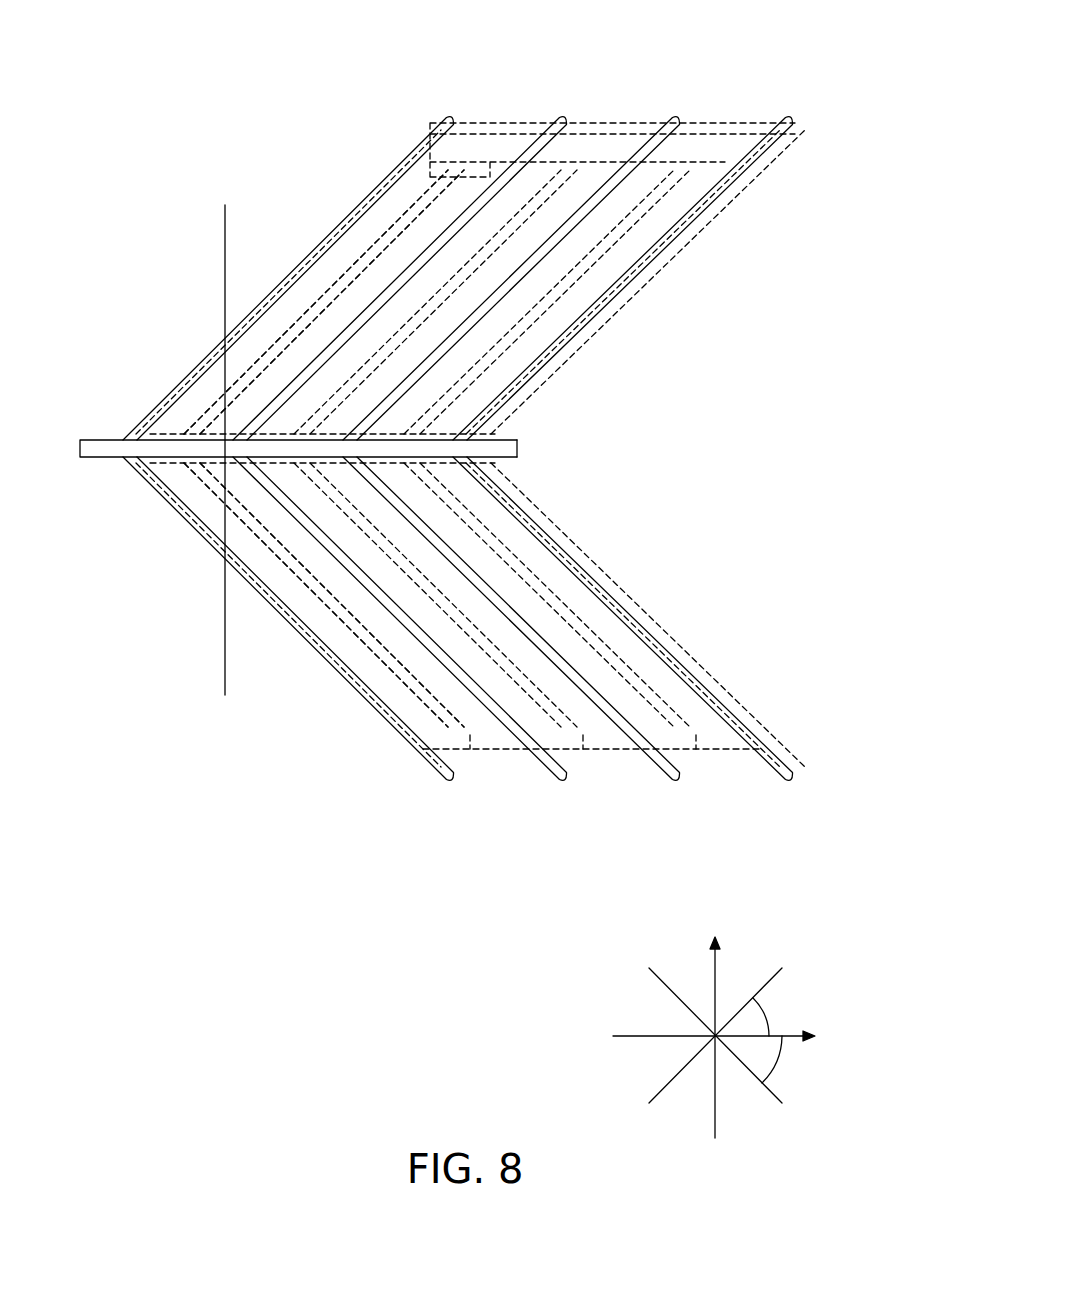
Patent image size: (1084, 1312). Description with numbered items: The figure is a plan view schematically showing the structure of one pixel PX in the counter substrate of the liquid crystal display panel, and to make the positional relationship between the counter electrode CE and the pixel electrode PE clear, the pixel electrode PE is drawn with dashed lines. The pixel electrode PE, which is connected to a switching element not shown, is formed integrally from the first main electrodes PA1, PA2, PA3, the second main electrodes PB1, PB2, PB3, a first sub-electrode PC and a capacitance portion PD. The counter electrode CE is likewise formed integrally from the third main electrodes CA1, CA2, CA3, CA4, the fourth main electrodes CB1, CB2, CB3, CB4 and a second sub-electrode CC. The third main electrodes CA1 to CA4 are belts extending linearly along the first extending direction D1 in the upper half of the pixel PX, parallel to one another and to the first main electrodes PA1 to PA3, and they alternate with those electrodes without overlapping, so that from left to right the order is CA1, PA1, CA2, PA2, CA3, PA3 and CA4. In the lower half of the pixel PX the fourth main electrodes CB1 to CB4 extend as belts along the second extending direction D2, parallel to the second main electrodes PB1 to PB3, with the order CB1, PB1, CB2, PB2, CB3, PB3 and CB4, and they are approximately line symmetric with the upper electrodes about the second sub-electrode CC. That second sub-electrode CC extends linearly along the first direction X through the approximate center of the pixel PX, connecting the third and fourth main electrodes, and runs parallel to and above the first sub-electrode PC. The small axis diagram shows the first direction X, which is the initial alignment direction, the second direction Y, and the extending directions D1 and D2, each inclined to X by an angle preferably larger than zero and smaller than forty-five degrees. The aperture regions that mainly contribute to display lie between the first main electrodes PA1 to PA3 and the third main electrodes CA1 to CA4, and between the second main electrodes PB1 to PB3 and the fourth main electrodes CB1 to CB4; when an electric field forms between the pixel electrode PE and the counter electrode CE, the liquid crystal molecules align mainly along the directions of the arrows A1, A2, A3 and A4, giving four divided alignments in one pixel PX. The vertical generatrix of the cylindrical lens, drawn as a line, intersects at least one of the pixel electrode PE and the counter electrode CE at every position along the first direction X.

The third main electrode CA1 is at (453, 118).
The third main electrode CA2 is at (566, 118).
The third main electrode CA3 is at (679, 118).
The third main electrode CA4 is at (791, 118).
The fourth main electrode CB1 is at (440, 780).
The fourth main electrode CB2 is at (552, 780).
The fourth main electrode CB3 is at (665, 780).
The fourth main electrode CB4 is at (778, 780).
The first main electrode PA1 is at (493, 160).
The first main electrode PA2 is at (607, 160).
The first main electrode PA3 is at (720, 160).
The second main electrode PB1 is at (473, 750).
The second main electrode PB2 is at (585, 750).
The second main electrode PB3 is at (697, 750).
The pixel PX is at (643, 118).
The capacitance portion PD is at (430, 177).
The pixel electrode PE is at (650, 233).
The first sub-electrode PC is at (172, 470).
The counter electrode CE is at (98, 470).
The second sub-electrode CC is at (500, 458).
The arrow A1 is at (364, 240).
The arrow A2 is at (394, 264).
The arrow A3 is at (483, 548).
The arrow A4 is at (512, 529).
The first direction X is at (725, 1037).
The second direction Y is at (714, 1021).
The first extending direction D1 is at (772, 975).
The second extending direction D2 is at (768, 1098).